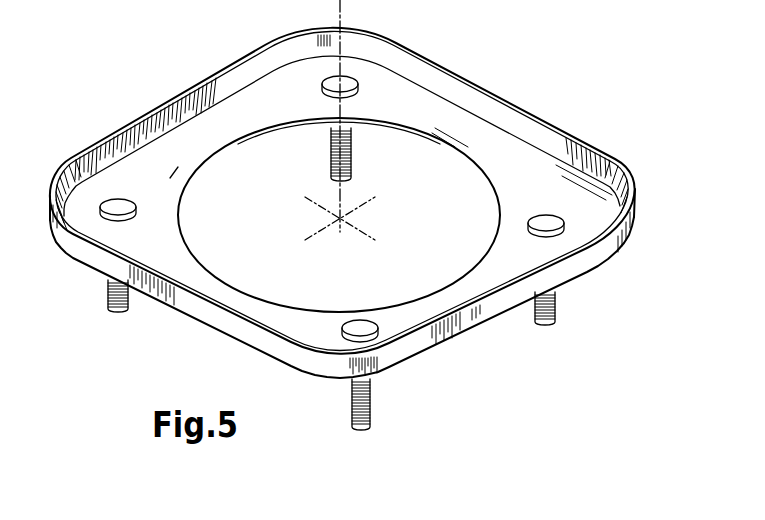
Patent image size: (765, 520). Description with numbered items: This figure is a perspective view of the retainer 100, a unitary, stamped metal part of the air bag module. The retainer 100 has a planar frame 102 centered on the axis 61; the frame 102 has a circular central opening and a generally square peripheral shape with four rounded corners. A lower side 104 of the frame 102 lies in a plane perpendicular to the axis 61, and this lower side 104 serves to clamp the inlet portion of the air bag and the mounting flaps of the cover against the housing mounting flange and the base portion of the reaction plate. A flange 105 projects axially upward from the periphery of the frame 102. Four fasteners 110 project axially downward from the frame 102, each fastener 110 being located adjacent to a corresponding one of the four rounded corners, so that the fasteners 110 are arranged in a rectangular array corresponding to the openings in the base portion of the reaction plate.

The retainer 100 is at (524, 73).
The planar frame 102 is at (407, 100).
The lower side 104 is at (484, 324).
The flange 105 is at (157, 116).
The fastener 110 is at (330, 150).
The axis 61 is at (348, 221).